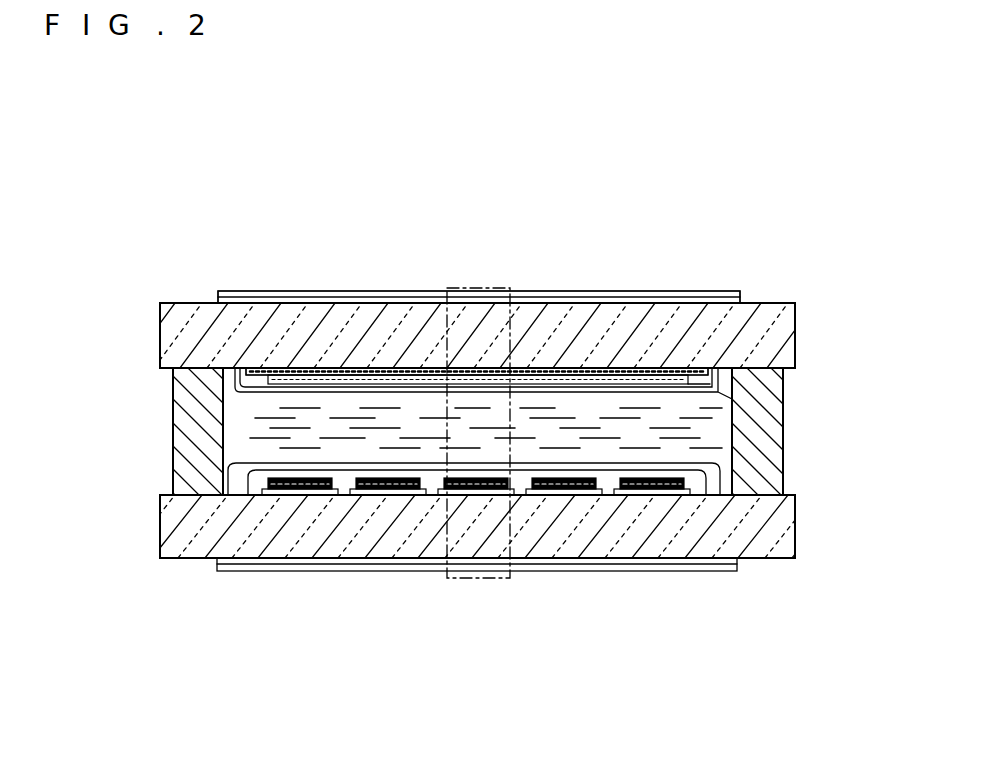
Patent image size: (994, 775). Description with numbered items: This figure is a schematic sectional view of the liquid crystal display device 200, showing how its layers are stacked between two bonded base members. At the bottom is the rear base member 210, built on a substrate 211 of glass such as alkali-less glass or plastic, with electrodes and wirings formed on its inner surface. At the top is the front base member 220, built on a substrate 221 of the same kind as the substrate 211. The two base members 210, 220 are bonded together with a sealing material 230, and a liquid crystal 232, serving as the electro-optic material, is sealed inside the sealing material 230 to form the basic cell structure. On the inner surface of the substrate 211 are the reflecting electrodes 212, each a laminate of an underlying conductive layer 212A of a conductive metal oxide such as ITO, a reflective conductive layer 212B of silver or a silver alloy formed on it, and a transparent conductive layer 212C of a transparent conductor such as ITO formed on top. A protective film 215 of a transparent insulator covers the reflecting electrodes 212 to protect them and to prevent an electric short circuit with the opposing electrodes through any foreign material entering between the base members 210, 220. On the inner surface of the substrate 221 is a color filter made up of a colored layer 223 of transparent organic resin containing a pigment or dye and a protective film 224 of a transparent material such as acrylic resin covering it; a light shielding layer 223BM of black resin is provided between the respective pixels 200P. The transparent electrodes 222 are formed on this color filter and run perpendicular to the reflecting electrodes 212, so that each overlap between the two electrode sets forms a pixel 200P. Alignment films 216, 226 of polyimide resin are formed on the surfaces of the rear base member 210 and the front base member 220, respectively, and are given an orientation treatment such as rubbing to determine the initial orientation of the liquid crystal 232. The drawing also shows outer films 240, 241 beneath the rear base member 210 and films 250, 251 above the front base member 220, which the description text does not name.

The liquid crystal display device 200 is at (503, 141).
The pixel 200P is at (475, 286).
The rear base member 210 is at (563, 565).
The substrate 211 is at (722, 559).
The reflecting electrode 212 is at (475, 496).
The underlying conductive layer 212A is at (376, 495).
The reflective conductive layer 212B is at (647, 496).
The transparent conductive layer 212C is at (323, 495).
The protective film 215 is at (697, 483).
The alignment film 216 is at (695, 470).
The front base member 220 is at (373, 281).
The substrate 221 is at (763, 304).
The transparent electrode 222 is at (405, 379).
The colored layer 223 is at (316, 369).
The light shielding layer 223BM is at (606, 373).
The protective film 224 is at (268, 389).
The alignment film 226 is at (783, 397).
The sealing material 230 is at (187, 450).
The liquid crystal 232 is at (678, 424).
The polarizer 240 is at (243, 572).
The retardation film 241 is at (268, 572).
The polarizer 250 is at (286, 294).
The retardation film 251 is at (398, 292).